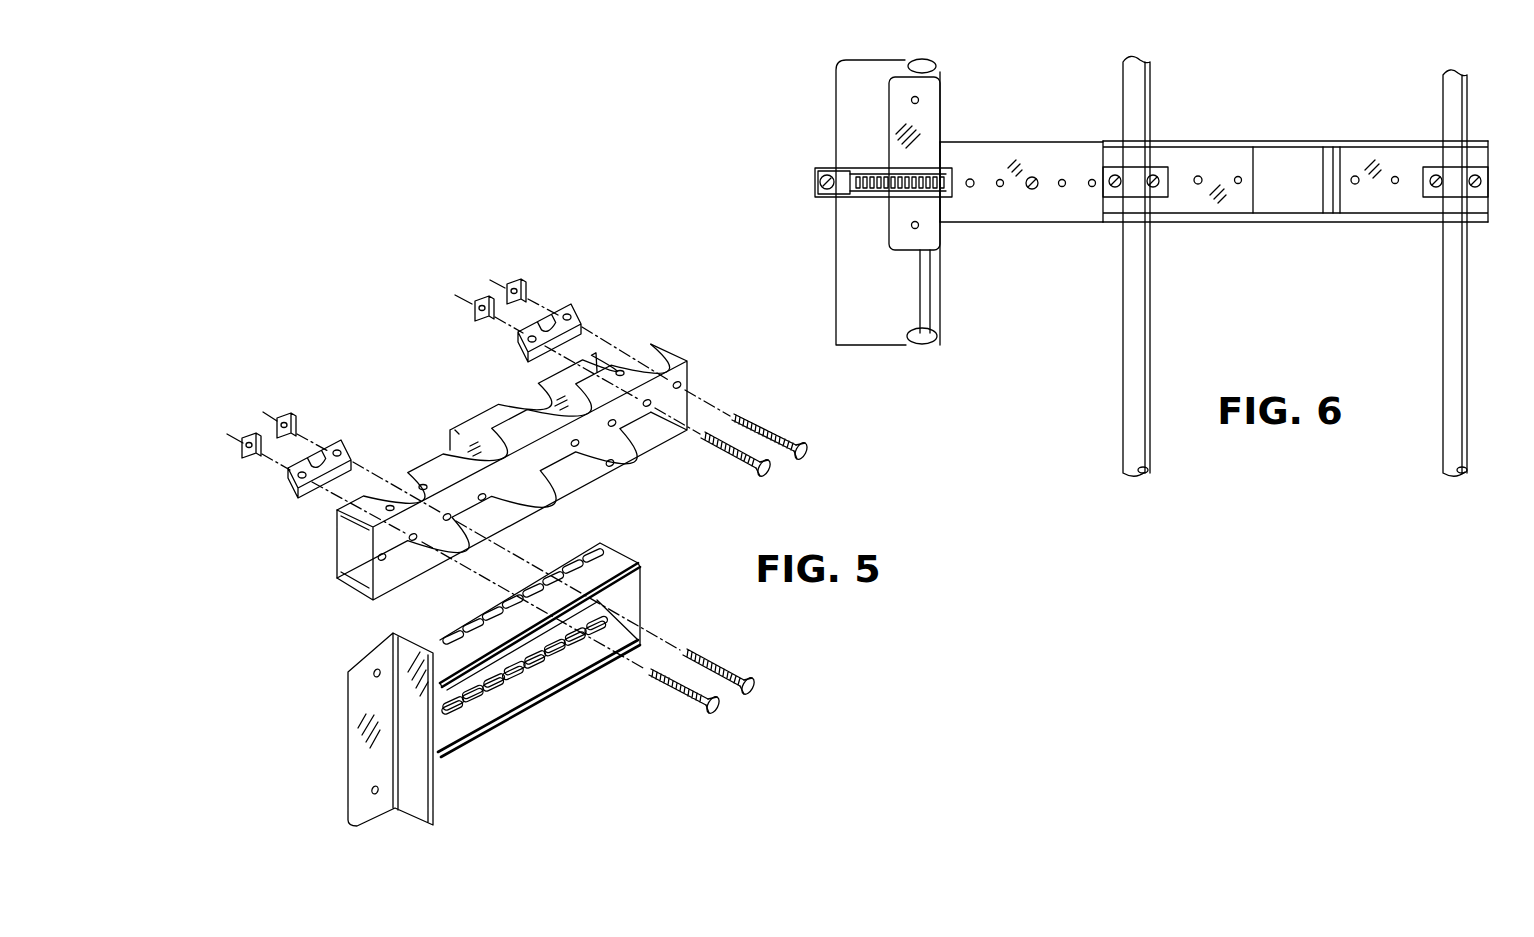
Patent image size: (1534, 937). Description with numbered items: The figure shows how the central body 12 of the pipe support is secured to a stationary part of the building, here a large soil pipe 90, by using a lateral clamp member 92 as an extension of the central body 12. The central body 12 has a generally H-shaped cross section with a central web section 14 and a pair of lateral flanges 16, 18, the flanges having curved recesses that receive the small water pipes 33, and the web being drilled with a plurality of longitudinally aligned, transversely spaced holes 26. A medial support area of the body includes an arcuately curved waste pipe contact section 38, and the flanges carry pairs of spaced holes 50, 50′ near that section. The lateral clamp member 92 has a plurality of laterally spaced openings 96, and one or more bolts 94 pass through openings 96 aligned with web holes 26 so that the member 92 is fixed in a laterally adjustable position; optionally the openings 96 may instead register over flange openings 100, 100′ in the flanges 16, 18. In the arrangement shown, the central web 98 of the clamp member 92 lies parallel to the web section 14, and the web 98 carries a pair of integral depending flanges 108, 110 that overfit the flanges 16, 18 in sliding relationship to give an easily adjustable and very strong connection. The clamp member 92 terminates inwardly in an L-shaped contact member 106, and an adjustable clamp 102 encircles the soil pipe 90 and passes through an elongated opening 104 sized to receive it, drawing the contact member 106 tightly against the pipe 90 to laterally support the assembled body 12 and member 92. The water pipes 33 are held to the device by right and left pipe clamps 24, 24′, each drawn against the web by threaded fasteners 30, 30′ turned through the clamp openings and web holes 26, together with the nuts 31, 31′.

In FIG. 5, the central body 12 is at (349, 597).
In FIG. 6, the central body 12 is at (1225, 222).
In FIG. 6, the central web section 14 is at (1225, 160).
In FIG. 5, the lateral flange 16 is at (583, 497).
In FIG. 6, the lateral flange 16 is at (1415, 222).
In FIG. 5, the lateral flange 18 is at (503, 413).
In FIG. 6, the lateral flange 18 is at (1355, 141).
In FIG. 5, the right pipe clamp 24 is at (282, 483).
In FIG. 6, the right pipe clamp 24 is at (1128, 198).
In FIG. 5, the left pipe clamp 24′ is at (562, 308).
In FIG. 6, the left pipe clamp 24′ is at (1460, 198).
In FIG. 6, the web holes 26 is at (1198, 185).
In FIG. 5, the threaded fastener 30 is at (812, 452).
In FIG. 6, the threaded fastener 30 is at (1153, 180).
In FIG. 5, the threaded fastener 30′ is at (772, 475).
In FIG. 6, the threaded fastener 30′ is at (1113, 179).
In FIG. 5, the nut 31 is at (290, 415).
In FIG. 5, the nut 31′ is at (235, 460).
In FIG. 6, the water pipe 33 is at (1133, 374).
In FIG. 6, the waste pipe contact section 38 is at (1305, 195).
In FIG. 5, the flange hole 50 is at (530, 393).
In FIG. 5, the flange hole 50′ is at (467, 430).
In FIG. 6, the soil pipe 90 is at (855, 278).
In FIG. 5, the lateral clamp member 92 is at (475, 742).
In FIG. 6, the lateral clamp member 92 is at (1075, 222).
In FIG. 5, the bolt 94 is at (571, 808).
In FIG. 6, the bolt 94 is at (1032, 190).
In FIG. 5, the laterally spaced openings 96 is at (413, 540).
In FIG. 6, the laterally spaced openings 96 is at (972, 180).
In FIG. 5, the central web 98 is at (593, 607).
In FIG. 6, the central web 98 is at (1040, 160).
In FIG. 5, the flange opening 100 is at (673, 316).
In FIG. 5, the hole 100′ is at (420, 485).
In FIG. 6, the adjustable clamp 102 is at (840, 195).
In FIG. 6, the elongated opening 104 is at (950, 196).
In FIG. 5, the L-shaped contact member 106 is at (357, 813).
In FIG. 6, the L-shaped contact member 106 is at (890, 124).
In FIG. 5, the depending flange 108 is at (505, 700).
In FIG. 5, the depending flange 110 is at (527, 610).